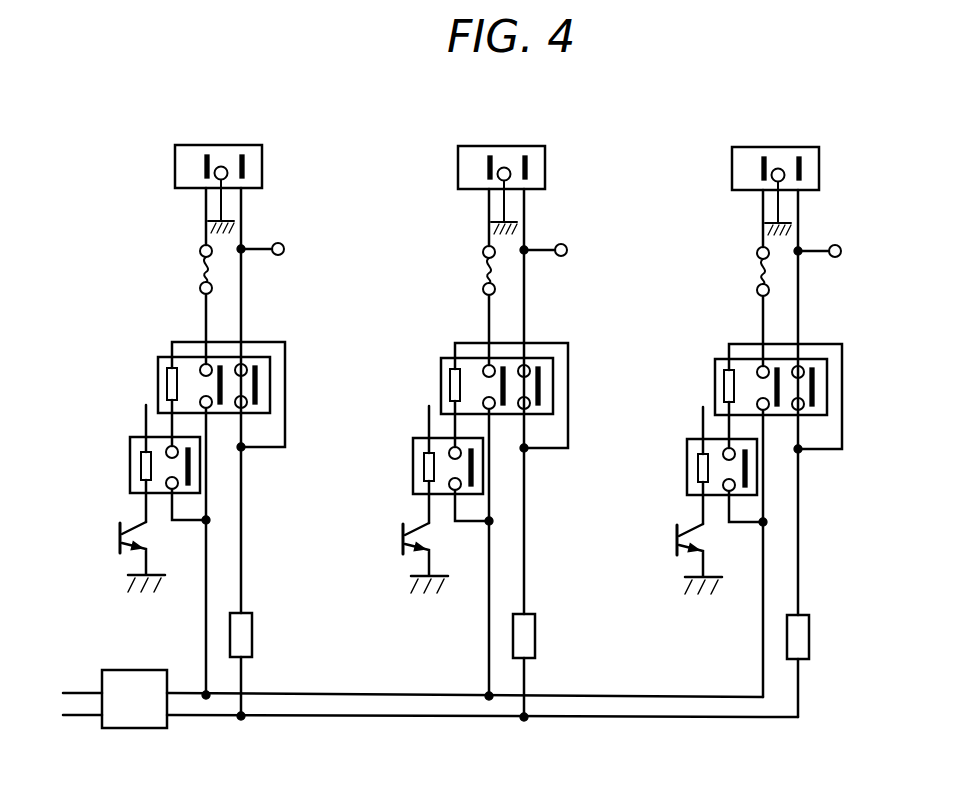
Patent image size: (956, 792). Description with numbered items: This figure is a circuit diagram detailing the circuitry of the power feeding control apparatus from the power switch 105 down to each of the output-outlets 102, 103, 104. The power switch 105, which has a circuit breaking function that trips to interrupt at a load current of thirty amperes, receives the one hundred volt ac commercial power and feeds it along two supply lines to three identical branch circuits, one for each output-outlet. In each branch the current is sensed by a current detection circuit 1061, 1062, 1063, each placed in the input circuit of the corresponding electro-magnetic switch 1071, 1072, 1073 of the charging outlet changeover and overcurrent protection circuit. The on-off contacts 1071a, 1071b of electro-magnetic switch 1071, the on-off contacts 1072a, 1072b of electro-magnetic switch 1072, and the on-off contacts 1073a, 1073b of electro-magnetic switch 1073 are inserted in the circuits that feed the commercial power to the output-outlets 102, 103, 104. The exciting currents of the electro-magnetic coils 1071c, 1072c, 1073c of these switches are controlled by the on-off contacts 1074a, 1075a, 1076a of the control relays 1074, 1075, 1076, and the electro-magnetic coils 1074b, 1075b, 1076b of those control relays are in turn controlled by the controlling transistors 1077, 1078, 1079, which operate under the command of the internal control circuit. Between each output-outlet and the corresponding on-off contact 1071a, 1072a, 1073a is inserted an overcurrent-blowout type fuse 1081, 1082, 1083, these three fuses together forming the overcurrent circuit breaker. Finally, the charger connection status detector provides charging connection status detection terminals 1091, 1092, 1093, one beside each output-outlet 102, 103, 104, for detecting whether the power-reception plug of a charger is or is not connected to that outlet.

The output-outlet 102 is at (236, 145).
The output-outlet 103 is at (509, 170).
The output-outlet 104 is at (783, 171).
The power switch 105 is at (120, 670).
The current detection circuit 1061 is at (253, 633).
The current detection circuit 1062 is at (565, 636).
The current detection circuit 1063 is at (839, 637).
The electro-magnetic switch 1071 is at (250, 353).
The on-off contact 1071a is at (203, 386).
The on-off contact 1071b is at (248, 386).
The electro-magnetic coil 1071c is at (163, 383).
The electro-magnetic switch 1072 is at (512, 376).
The on-off contact 1072a is at (458, 354).
The on-off contact 1072b is at (583, 384).
The electro-magnetic coil 1072c is at (418, 370).
The electro-magnetic switch 1073 is at (786, 377).
The on-off contact 1073a is at (732, 355).
The on-off contact 1073b is at (857, 385).
The electro-magnetic coil 1073c is at (692, 371).
The control relay 1074 is at (138, 437).
The on-off contact 1074a is at (180, 467).
The electro-magnetic coil 1074b is at (140, 467).
The control relay 1075 is at (434, 457).
The on-off contact 1075a is at (529, 468).
The electro-magnetic coil 1075b is at (390, 460).
The control relay 1076 is at (708, 458).
The on-off contact 1076a is at (803, 469).
The electro-magnetic coil 1076b is at (664, 461).
The controlling transistor 1077 is at (120, 527).
The controlling transistor 1078 is at (399, 542).
The controlling transistor 1079 is at (673, 543).
The overcurrent-blowout type fuse 1081 is at (197, 273).
The overcurrent-blowout type fuse 1082 is at (460, 263).
The overcurrent-blowout type fuse 1083 is at (734, 264).
The charging connection status detection terminal 1091 is at (308, 228).
The charging connection status detection terminal 1092 is at (588, 231).
The charging connection status detection terminal 1093 is at (862, 232).